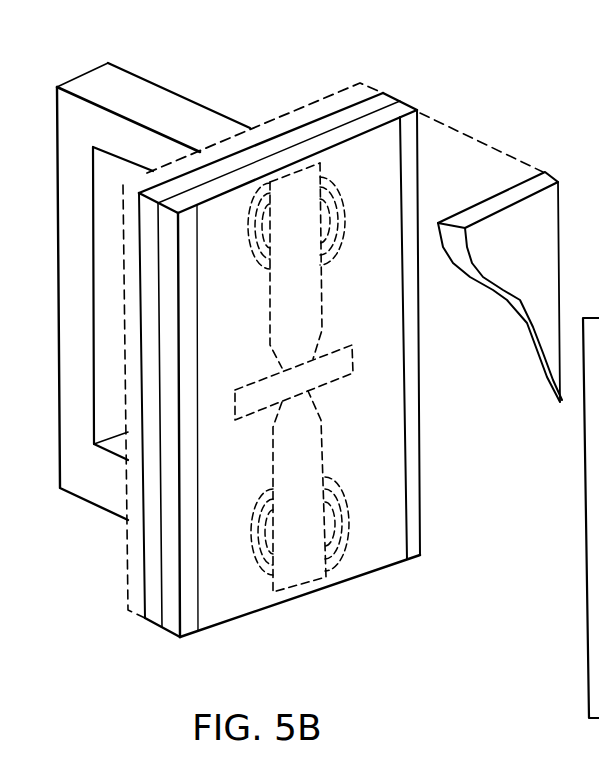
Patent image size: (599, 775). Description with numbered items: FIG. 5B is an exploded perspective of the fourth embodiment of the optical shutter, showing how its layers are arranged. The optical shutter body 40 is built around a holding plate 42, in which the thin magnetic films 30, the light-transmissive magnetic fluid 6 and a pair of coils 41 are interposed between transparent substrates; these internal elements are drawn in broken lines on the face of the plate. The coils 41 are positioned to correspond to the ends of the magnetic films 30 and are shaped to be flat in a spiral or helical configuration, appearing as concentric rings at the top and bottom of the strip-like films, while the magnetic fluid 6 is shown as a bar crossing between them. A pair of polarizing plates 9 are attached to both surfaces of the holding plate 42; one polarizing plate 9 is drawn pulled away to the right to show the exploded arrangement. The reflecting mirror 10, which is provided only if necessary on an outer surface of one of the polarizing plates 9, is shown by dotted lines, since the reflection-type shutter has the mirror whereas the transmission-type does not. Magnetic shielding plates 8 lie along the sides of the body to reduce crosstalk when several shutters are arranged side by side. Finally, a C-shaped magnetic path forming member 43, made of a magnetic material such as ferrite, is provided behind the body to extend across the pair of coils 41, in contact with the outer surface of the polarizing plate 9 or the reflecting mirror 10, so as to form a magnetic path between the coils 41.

The magnetic fluid 6 is at (336, 373).
The magnetic shielding plate 8 is at (187, 638).
The polarizing plate 9 is at (382, 93).
The reflecting mirror 10 is at (308, 102).
The thin magnetic film 30 is at (312, 302).
The optical shutter body 40 is at (347, 596).
The coil 41 is at (338, 184).
The holding plate 42 is at (243, 600).
The C-shaped magnetic path forming member 43 is at (68, 105).